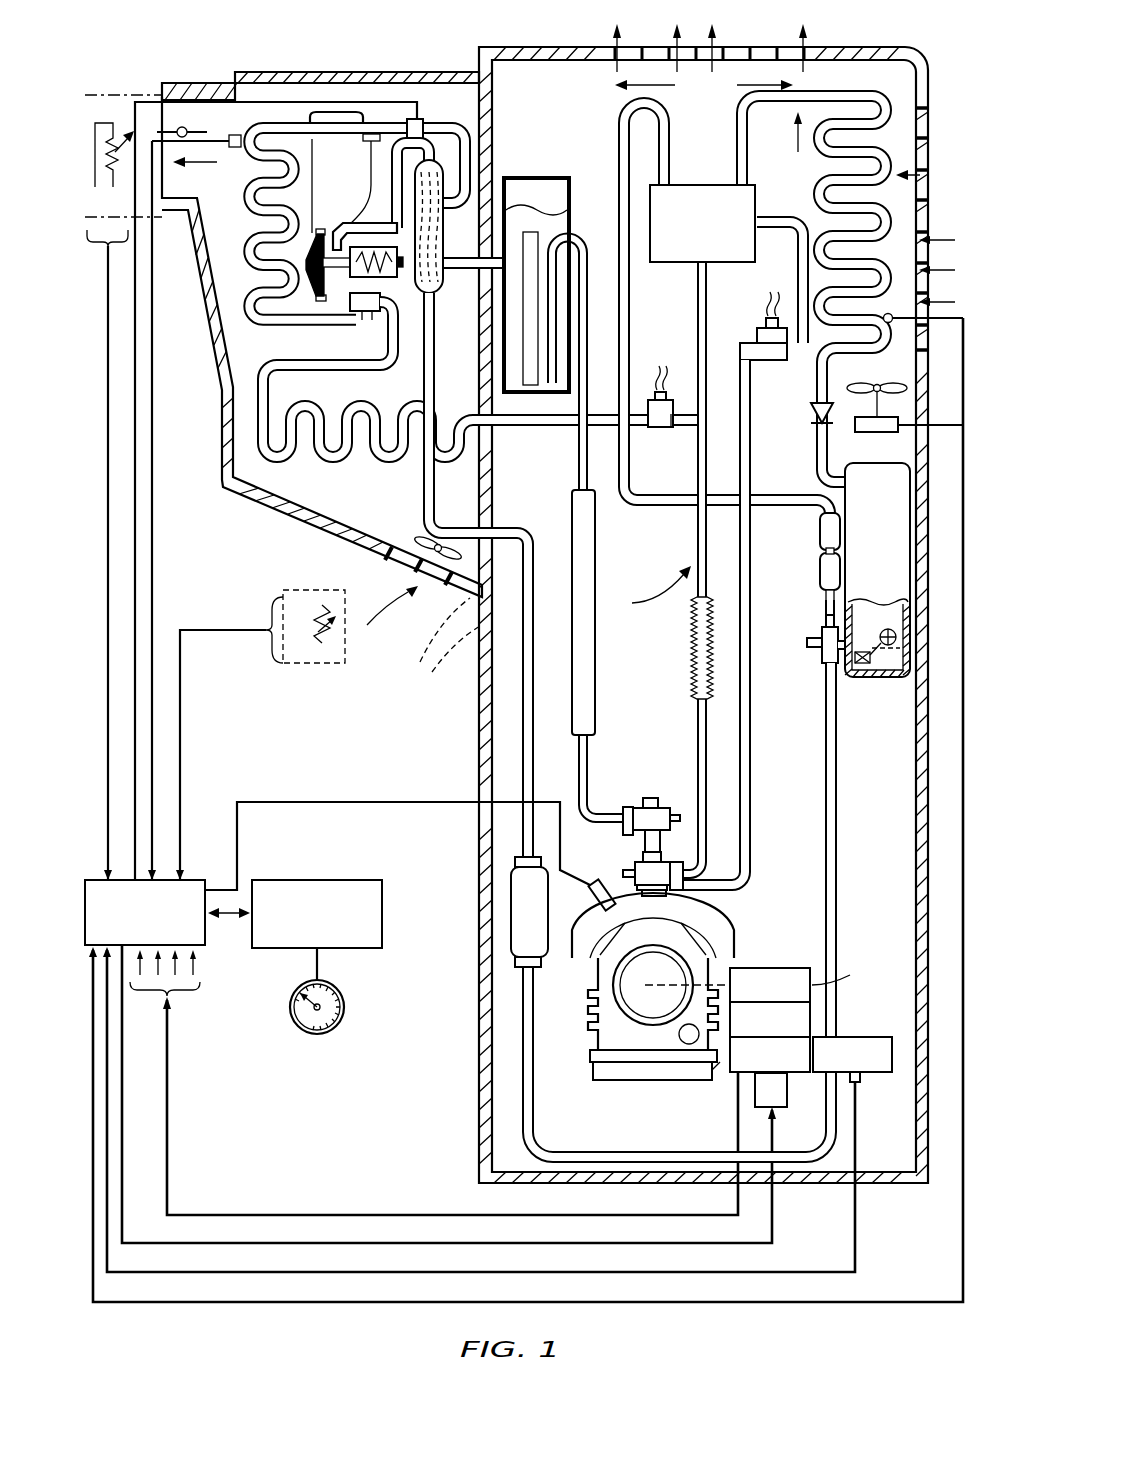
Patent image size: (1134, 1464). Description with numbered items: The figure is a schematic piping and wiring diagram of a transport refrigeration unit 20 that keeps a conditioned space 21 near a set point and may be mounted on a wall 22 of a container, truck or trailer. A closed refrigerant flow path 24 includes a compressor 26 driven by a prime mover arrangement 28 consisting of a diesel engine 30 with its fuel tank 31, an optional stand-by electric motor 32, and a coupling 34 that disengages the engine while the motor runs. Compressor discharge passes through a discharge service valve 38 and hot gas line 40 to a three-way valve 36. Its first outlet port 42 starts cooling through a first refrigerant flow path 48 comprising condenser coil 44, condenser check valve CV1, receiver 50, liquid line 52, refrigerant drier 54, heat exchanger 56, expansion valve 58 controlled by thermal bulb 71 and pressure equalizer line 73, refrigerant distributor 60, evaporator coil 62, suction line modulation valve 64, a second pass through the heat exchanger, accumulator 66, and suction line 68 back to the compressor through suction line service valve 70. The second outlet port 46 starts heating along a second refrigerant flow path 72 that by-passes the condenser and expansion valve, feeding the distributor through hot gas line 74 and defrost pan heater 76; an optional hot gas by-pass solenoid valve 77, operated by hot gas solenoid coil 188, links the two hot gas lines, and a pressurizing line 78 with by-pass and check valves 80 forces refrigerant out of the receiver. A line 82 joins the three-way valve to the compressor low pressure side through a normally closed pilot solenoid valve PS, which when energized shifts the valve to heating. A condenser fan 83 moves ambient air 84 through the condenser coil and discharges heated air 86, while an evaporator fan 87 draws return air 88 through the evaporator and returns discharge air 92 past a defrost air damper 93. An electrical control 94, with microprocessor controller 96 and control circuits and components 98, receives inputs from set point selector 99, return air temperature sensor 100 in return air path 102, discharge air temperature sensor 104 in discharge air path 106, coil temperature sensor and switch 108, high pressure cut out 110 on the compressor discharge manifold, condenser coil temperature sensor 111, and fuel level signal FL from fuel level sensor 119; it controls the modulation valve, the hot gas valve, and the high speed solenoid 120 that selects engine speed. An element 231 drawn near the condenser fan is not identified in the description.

The transport refrigeration unit 20 is at (218, 1336).
The conditioned space 21 is at (291, 561).
The wall 22 is at (493, 140).
The closed fluid refrigerant flow path 24 is at (647, 587).
The refrigerant compressor 26 is at (590, 1022).
The prime mover arrangement 28 is at (758, 968).
The internal combustion engine 30 is at (728, 1072).
The fuel tank 31 is at (890, 1037).
The stand-by electric motor 32 is at (845, 971).
The coupling 34 is at (812, 1020).
The three-way valve 36 is at (703, 185).
The discharge service valve 38 is at (640, 870).
The hot gas line 40 is at (697, 520).
The first outlet port 42 is at (747, 182).
The condenser coil 44 is at (818, 188).
The second outlet port 46 is at (658, 182).
The first refrigerant flow path 48 is at (753, 92).
The receiver 50 is at (872, 678).
The liquid line 52 is at (842, 790).
The refrigerant drier 54 is at (511, 888).
The heat exchanger 56 is at (445, 292).
The expansion valve 58 is at (322, 300).
The refrigerant distributor 60 is at (436, 350).
The evaporator coil 62 is at (243, 250).
The suction line modulation valve 64 is at (421, 119).
The accumulator 66 is at (524, 178).
The suction line 68 is at (577, 462).
The suction line service valve 70 is at (648, 808).
The thermal bulb 71 is at (345, 112).
The second refrigerant flow path 72 is at (659, 92).
The pressure equalizer line 73 is at (368, 182).
The hot gas line 74 is at (631, 280).
The defrost pan heater 76 is at (342, 458).
The hot gas by-pass solenoid valve 77 is at (671, 427).
The pressurizing line 78 is at (688, 498).
The by-pass and check valves 80 is at (820, 570).
The line 82 is at (750, 590).
The condenser fan 83 is at (865, 388).
The ambient air 84 is at (921, 177).
The heated air 86 is at (800, 45).
The evaporator fan 87 is at (420, 540).
The return air 88 is at (387, 599).
The discharge air 92 is at (216, 164).
The defrost air damper 93 is at (182, 127).
The electrical control 94 is at (256, 849).
The microprocessor based controller 96 is at (206, 945).
The electrical control circuits and components 98 is at (340, 880).
The set point temperature selector 99 is at (343, 1015).
The return air temperature sensor 100 is at (330, 665).
The return air path 102 is at (430, 622).
The discharge air temperature sensor 104 is at (128, 134).
The discharge air path 106 is at (95, 122).
The coil temperature sensor and switch 108 is at (236, 135).
The high pressure cut out 110 is at (594, 895).
The condenser coil temperature sensor 111 is at (891, 323).
The fuel level sensor 119 is at (860, 1082).
The high speed solenoid 120 is at (790, 1100).
The hot gas solenoid coil 188 is at (655, 385).
The fan motor 231 is at (882, 432).
The pilot solenoid valve PS is at (765, 330).
The condenser check valve CV1 is at (812, 412).
The fuel level signal FL is at (857, 1243).